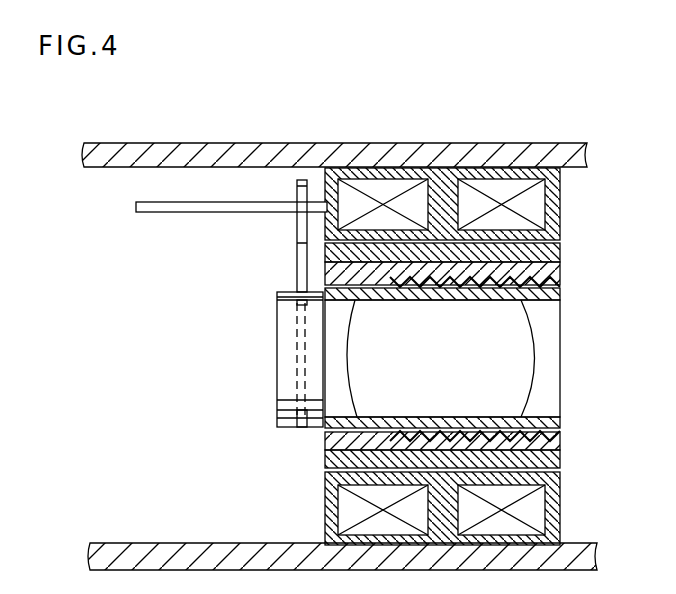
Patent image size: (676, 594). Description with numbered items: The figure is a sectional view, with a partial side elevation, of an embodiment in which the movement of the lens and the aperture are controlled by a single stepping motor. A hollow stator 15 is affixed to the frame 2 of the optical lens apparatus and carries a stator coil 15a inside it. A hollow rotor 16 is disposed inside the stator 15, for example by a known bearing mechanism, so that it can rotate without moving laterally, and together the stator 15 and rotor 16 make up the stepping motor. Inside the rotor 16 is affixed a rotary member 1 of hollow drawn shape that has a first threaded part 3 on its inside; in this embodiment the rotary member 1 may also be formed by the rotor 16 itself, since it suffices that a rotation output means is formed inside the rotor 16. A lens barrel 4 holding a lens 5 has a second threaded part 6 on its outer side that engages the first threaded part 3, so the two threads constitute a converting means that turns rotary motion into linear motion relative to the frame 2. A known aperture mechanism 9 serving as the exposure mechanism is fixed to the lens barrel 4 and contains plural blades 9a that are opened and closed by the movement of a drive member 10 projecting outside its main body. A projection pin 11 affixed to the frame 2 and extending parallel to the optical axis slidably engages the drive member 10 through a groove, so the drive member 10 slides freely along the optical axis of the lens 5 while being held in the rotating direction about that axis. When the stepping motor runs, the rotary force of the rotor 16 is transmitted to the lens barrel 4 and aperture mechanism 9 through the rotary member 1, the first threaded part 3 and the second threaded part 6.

The rotary member 1 is at (478, 293).
The frame 2 is at (570, 155).
The first threaded part 3 is at (560, 283).
The lens barrel 4 is at (562, 355).
The lens 5 is at (562, 418).
The second threaded part 6 is at (562, 300).
The aperture mechanism 9 is at (276, 365).
The blades 9a is at (297, 340).
The drive member 10 is at (296, 266).
The projection pin 11 is at (193, 212).
The stator 15 is at (481, 205).
The stator coil 15a is at (548, 218).
The rotor 16 is at (562, 253).